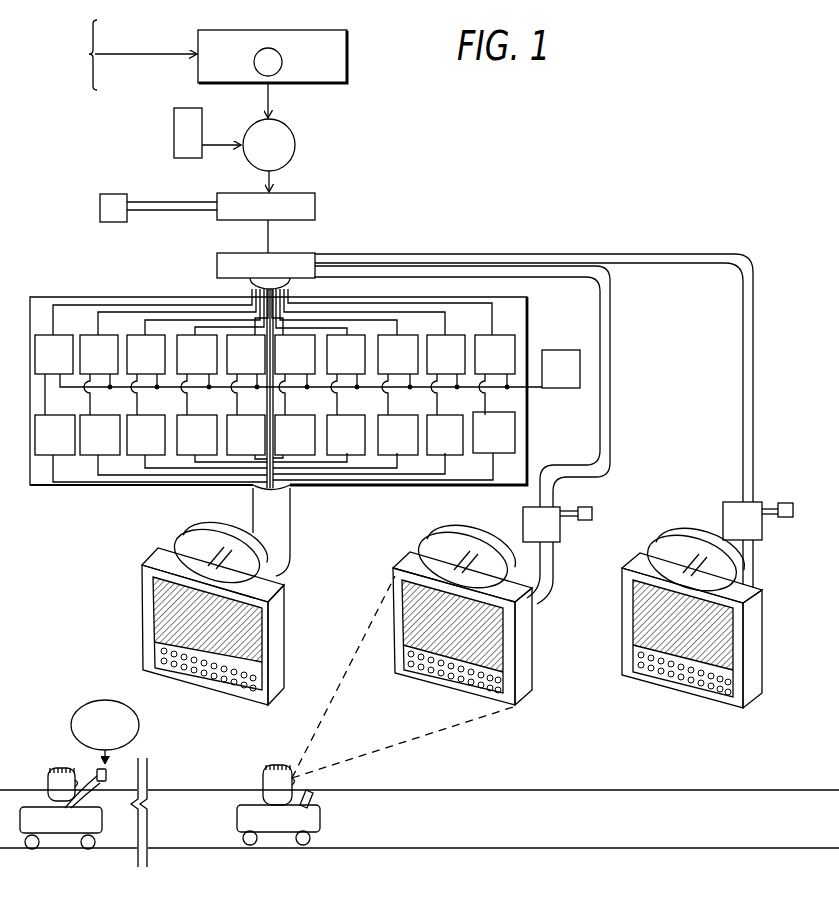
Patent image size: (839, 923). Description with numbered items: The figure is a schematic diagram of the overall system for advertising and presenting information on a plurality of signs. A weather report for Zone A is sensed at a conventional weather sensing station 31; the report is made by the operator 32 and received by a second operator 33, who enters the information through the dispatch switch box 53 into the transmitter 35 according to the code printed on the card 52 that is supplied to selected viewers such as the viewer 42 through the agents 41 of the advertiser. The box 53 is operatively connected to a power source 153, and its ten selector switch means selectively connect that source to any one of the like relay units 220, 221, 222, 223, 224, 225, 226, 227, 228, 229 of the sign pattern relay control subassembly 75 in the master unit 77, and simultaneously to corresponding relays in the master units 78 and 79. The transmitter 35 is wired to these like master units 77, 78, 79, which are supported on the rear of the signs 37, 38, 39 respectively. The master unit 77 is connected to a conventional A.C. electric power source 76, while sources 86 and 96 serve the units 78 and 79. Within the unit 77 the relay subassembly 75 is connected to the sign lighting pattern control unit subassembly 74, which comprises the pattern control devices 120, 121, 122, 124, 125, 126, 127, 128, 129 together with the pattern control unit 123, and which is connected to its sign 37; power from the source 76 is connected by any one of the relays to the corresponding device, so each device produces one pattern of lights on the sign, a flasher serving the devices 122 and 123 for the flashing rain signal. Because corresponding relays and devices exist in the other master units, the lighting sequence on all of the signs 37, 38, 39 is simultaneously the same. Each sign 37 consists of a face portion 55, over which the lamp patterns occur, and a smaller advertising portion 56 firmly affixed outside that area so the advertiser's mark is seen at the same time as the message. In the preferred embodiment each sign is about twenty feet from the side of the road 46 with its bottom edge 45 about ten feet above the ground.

The Zone A is at (128, 55).
The weather sensing station 31 is at (348, 62).
The operator 32 is at (265, 72).
The second operator 33 is at (286, 126).
The transmitter 35 is at (315, 256).
The sign 37 is at (185, 614).
The sign 38 is at (393, 565).
The sign 39 is at (643, 556).
The agents of the advertiser 41 is at (70, 725).
The viewer 42 is at (295, 778).
The bottom edge of sign 45 is at (208, 696).
The road 46 is at (690, 806).
The code card 52 is at (174, 120).
The dispatch switch box 53 is at (302, 199).
The face portion 55 is at (153, 606).
The advertising portion 56 is at (206, 534).
The sign lighting pattern control unit subassembly 74 is at (530, 437).
The sign pattern relay control subassembly 75 is at (517, 336).
The electric power source 76 is at (570, 379).
The master unit 77 is at (160, 294).
The master unit 78 is at (522, 522).
The master unit 79 is at (736, 502).
The electric power source 86 is at (592, 509).
The electric power source 96 is at (785, 503).
The power source 153 is at (100, 206).
The pattern control device 120 is at (55, 435).
The pattern control device 121 is at (100, 435).
The pattern control device 122 is at (146, 435).
The pattern control unit 123 is at (197, 435).
The pattern control device 124 is at (246, 435).
The pattern control device 125 is at (295, 435).
The pattern control device 126 is at (346, 435).
The pattern control device 127 is at (398, 435).
The pattern control device 128 is at (445, 435).
The pattern control device 129 is at (494, 432).
The relay unit 220 is at (54, 375).
The relay unit 221 is at (99, 375).
The relay unit 222 is at (146, 375).
The relay unit 223 is at (197, 375).
The relay unit 224 is at (246, 375).
The relay unit 225 is at (295, 375).
The relay unit 226 is at (346, 375).
The relay unit 227 is at (398, 375).
The relay unit 228 is at (446, 375).
The relay unit 229 is at (495, 375).